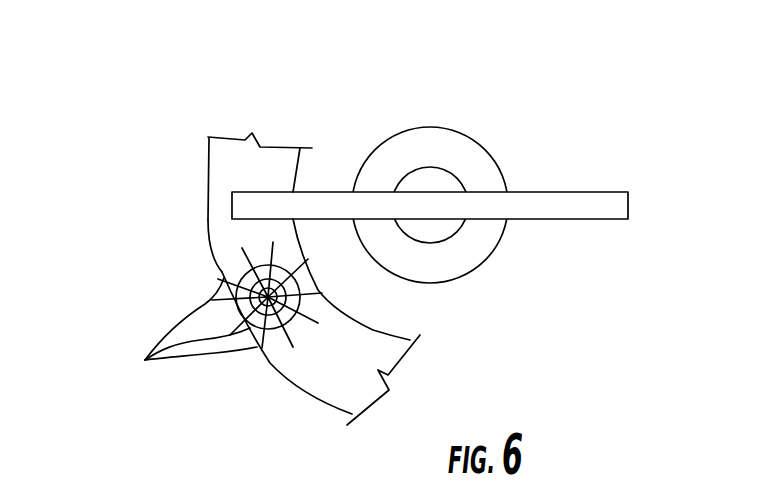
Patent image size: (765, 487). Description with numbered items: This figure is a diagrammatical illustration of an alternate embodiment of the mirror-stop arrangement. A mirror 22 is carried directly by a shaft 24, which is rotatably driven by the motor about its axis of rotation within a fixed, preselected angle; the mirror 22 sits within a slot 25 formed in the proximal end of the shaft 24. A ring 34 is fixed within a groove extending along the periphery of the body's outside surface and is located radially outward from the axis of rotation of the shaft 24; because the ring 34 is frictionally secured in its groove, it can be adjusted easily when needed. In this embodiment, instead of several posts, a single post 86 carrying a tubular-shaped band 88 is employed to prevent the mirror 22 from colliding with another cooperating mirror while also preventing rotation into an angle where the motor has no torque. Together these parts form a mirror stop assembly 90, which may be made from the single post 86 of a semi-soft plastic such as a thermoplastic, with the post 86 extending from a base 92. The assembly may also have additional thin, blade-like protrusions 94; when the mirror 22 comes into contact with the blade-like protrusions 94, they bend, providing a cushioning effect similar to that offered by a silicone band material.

The mirror 22 is at (563, 222).
The shaft 24 is at (470, 153).
The slot 25 is at (468, 190).
The ring 34 is at (268, 163).
The single post 86 is at (312, 283).
The tubular-shaped band 88 is at (294, 272).
The mirror stop assembly 90 is at (122, 277).
The base 92 is at (340, 249).
The blade-like protrusions 94 is at (188, 332).